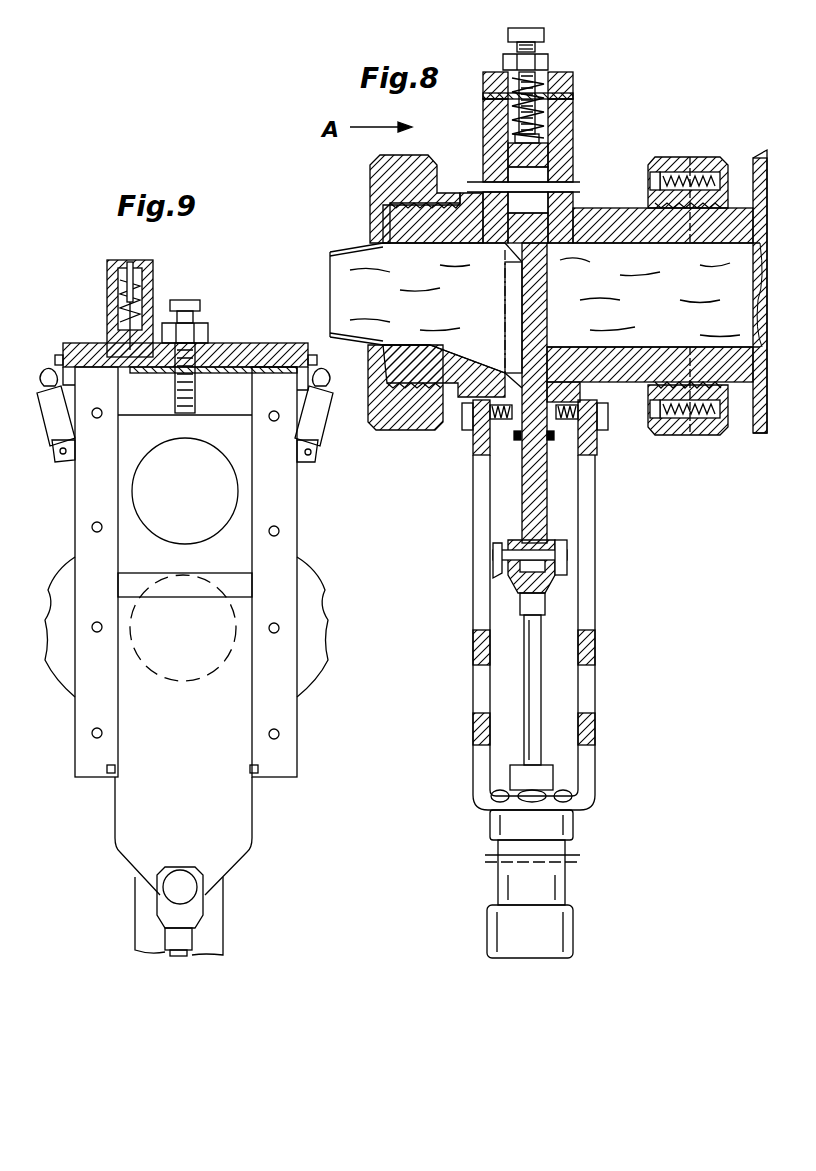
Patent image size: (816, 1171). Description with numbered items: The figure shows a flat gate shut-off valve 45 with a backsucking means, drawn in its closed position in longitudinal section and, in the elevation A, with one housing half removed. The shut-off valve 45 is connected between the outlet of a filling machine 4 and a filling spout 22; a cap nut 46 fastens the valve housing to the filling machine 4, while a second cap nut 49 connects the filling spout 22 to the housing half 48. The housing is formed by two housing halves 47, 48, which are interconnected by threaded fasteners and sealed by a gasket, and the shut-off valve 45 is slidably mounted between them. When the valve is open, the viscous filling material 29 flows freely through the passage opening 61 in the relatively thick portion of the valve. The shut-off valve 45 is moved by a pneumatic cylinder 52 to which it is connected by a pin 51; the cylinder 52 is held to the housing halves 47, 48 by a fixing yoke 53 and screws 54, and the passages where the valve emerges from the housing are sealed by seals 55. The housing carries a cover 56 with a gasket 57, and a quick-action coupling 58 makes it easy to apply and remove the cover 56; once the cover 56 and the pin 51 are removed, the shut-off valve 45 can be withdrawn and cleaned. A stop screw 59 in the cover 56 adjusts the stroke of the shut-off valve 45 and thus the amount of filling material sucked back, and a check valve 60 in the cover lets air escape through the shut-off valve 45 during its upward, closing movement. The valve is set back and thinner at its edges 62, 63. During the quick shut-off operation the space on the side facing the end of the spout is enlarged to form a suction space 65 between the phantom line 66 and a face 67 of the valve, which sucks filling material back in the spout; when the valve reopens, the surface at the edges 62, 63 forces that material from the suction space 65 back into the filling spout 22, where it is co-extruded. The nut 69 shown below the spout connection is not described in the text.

In FIG. 8, the filling machine 4 is at (757, 425).
In FIG. 8, the filling spout 22 is at (340, 249).
In FIG. 8, the viscous filling material 29 is at (700, 324).
In FIG. 8, the shut-off valve 45 is at (540, 518).
In FIG. 9, the shut-off valve 45 is at (230, 840).
In FIG. 8, the cap nut 46 is at (692, 160).
In FIG. 8, the housing half 47 is at (566, 128).
In FIG. 8, the housing half 48 is at (497, 131).
In FIG. 8, the cap nut 49 is at (395, 176).
In FIG. 8, the pin 51 is at (568, 563).
In FIG. 8, the pneumatic cylinder 52 is at (550, 881).
In FIG. 8, the fixing yoke 53 is at (588, 620).
In FIG. 8, the screws 54 is at (477, 432).
In FIG. 8, the seals 55 is at (551, 442).
In FIG. 8, the cover 56 is at (565, 86).
In FIG. 9, the cover 56 is at (76, 350).
In FIG. 8, the gasket 57 is at (486, 96).
In FIG. 9, the gasket 57 is at (267, 366).
In FIG. 9, the quick-action coupling 58 is at (58, 445).
In FIG. 8, the stop screw 59 is at (545, 36).
In FIG. 9, the stop screw 59 is at (186, 298).
In FIG. 9, the check valve 60 is at (113, 310).
In FIG. 8, the passage opening 61 is at (550, 176).
In FIG. 8, the edge 62 is at (504, 246).
In FIG. 8, the edge 63 is at (516, 268).
In FIG. 8, the suction space 65 is at (514, 338).
In FIG. 8, the phantom line 66 is at (450, 347).
In FIG. 8, the face 67 is at (548, 303).
In FIG. 8, the lock nut 69 is at (420, 392).